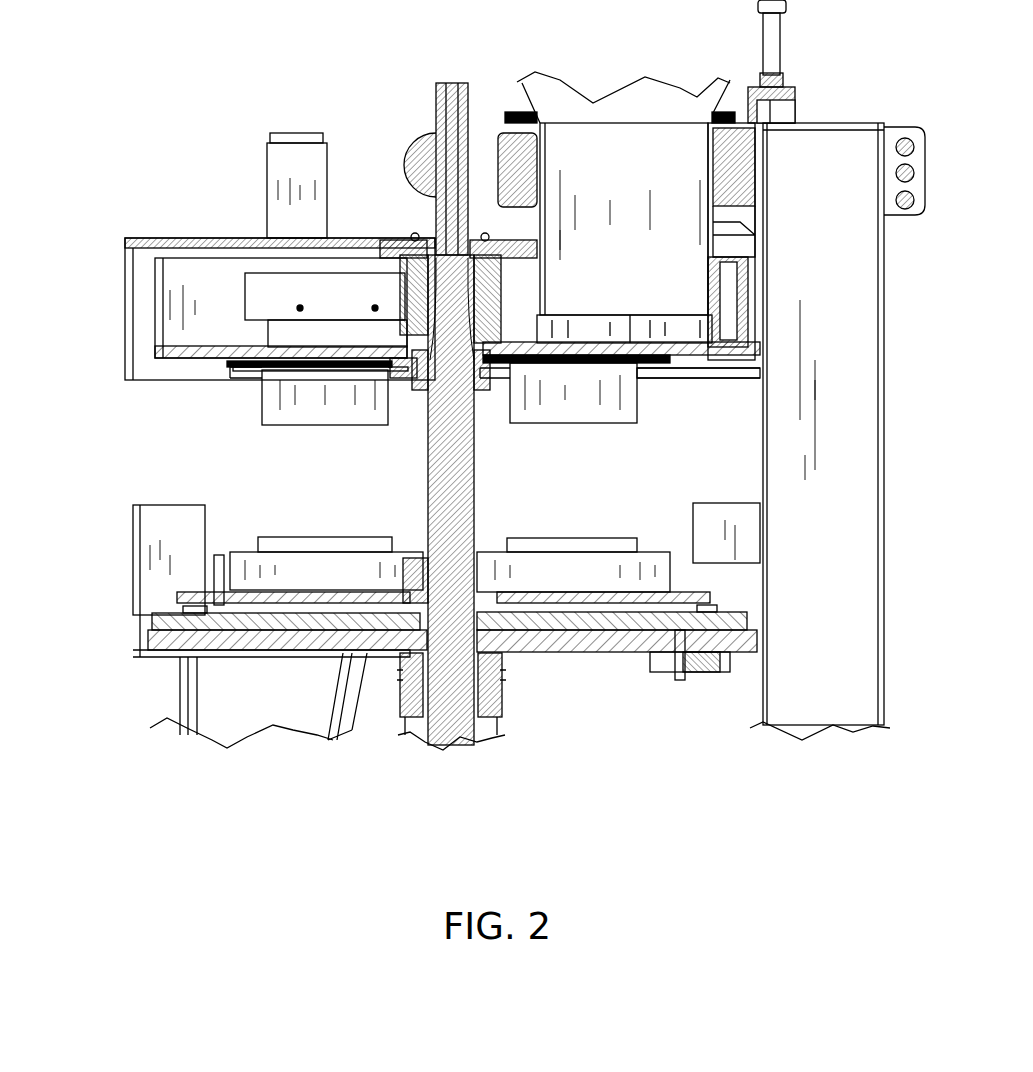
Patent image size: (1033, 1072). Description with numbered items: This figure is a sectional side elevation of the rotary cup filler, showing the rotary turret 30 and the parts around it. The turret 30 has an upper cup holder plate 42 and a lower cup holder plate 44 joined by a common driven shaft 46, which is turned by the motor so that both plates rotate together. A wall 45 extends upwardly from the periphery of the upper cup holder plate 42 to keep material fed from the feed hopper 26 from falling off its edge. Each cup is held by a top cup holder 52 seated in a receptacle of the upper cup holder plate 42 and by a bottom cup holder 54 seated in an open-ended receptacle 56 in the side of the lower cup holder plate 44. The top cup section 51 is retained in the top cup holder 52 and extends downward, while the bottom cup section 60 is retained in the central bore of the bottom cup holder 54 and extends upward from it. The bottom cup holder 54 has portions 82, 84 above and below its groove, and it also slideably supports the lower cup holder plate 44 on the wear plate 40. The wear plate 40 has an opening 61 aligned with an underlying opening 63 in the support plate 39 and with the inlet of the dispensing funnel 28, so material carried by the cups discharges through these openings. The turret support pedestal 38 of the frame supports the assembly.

The feed hopper 26 is at (518, 98).
The dispensing funnel 28 is at (180, 668).
The rotary turret 30 is at (82, 408).
The turret support pedestal 38 is at (882, 405).
The support plate 39 is at (527, 656).
The wear plate 40 is at (735, 642).
The upper cup holder plate 42 is at (182, 356).
The lower cup holder plate 44 is at (221, 578).
The wall 45 is at (158, 296).
The driven shaft 46 is at (477, 445).
The top cup section 51 is at (350, 427).
The top cup holder 52 is at (241, 372).
The bottom cup holder 54 is at (401, 534).
The receptacle 56 is at (222, 580).
The bottom cup section 60 is at (280, 540).
The opening 61 is at (185, 700).
The opening 63 is at (366, 688).
The bottom cup holder portion 82 is at (296, 578).
The bottom cup holder portion 84 is at (235, 655).